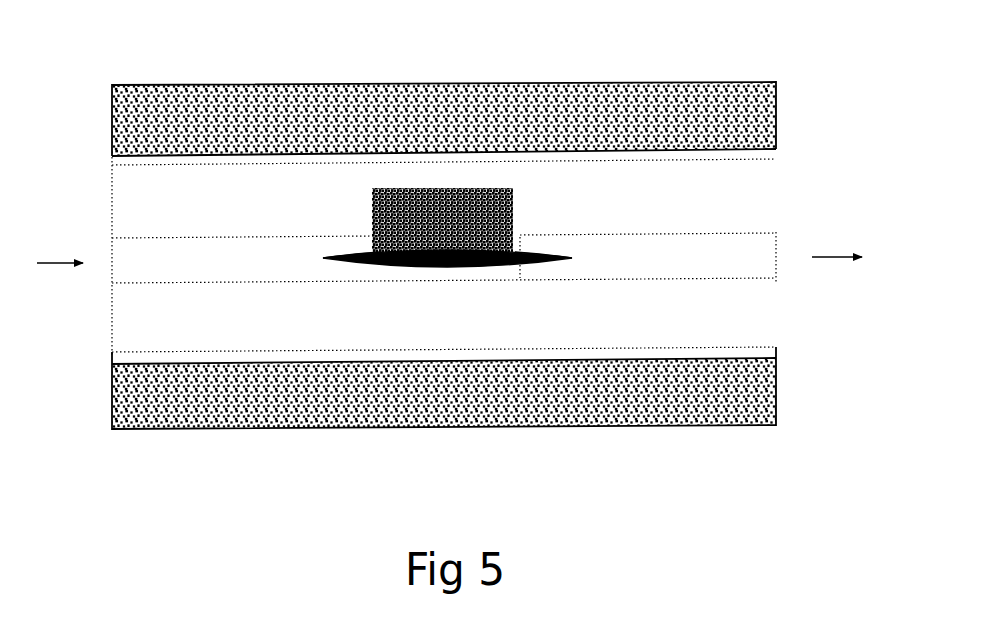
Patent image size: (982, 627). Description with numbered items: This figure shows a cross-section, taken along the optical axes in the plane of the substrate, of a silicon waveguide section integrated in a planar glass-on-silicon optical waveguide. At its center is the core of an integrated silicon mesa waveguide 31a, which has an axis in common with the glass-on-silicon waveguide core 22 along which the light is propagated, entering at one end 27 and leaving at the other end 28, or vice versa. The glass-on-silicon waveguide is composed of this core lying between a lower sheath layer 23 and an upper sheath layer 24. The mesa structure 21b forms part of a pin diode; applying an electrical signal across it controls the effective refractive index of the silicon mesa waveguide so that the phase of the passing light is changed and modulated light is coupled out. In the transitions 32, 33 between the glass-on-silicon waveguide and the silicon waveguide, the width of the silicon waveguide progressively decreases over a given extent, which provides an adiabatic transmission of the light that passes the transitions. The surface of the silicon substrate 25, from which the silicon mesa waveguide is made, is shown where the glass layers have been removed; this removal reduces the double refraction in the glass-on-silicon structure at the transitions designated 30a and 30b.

The mesa structure 21b is at (472, 253).
The glass-on-silicon waveguide core 22 is at (175, 263).
The lower sheath layer 23 is at (135, 160).
The upper sheath layer 24 is at (280, 215).
The silicon substrate 25 is at (677, 117).
The light coupling-in point 27 is at (59, 242).
The light coupling-out point 28 is at (837, 233).
The first transition 30a is at (753, 147).
The second transition 30b is at (730, 360).
The core of integrated silicon mesa waveguide 31a is at (418, 212).
The first waveguide transition 32 is at (352, 260).
The second waveguide transition 33 is at (543, 265).